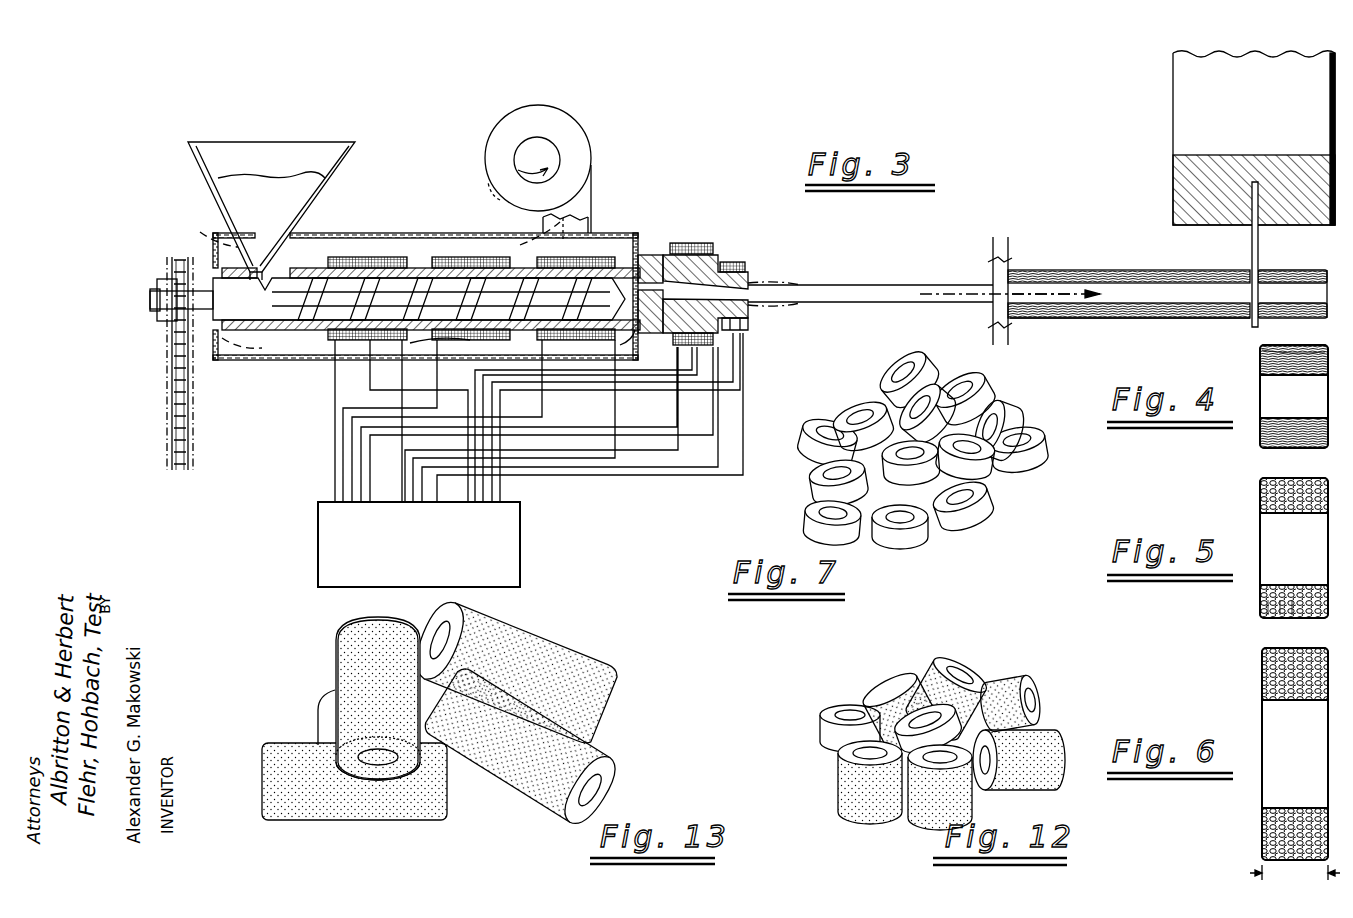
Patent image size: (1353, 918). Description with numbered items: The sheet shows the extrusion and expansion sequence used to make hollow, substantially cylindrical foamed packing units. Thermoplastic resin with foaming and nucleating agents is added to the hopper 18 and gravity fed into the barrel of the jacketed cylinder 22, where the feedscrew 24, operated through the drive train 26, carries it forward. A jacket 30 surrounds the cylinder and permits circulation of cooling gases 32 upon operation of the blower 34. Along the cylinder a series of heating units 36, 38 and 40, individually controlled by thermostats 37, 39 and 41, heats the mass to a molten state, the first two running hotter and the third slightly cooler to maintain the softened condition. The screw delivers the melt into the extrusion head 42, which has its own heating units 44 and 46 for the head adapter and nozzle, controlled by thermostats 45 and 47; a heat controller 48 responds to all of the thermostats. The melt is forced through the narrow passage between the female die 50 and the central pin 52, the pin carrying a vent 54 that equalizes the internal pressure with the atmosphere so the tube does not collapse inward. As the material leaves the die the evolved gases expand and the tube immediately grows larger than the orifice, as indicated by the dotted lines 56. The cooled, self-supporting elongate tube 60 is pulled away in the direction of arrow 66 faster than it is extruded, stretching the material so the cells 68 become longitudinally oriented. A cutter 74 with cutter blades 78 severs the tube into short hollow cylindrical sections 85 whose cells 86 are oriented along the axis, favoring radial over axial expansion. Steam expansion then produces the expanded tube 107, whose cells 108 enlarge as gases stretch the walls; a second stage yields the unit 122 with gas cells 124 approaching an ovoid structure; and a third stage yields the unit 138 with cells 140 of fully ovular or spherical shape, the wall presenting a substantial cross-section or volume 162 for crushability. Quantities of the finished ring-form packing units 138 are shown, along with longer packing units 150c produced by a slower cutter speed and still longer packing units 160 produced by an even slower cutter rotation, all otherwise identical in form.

In FIG. 3, the hopper 18 is at (358, 160).
In FIG. 3, the jacketed cylinder 22 is at (414, 258).
In FIG. 3, the feedscrew 24 is at (372, 279).
In FIG. 3, the drive train 26 is at (190, 414).
In FIG. 3, the jacket 30 is at (618, 233).
In FIG. 3, the cooling gases 32 is at (188, 354).
In FIG. 3, the blower 34 is at (575, 146).
In FIG. 3, the heating unit 36 is at (340, 345).
In FIG. 3, the thermostat 37 is at (378, 345).
In FIG. 3, the heating unit 38 is at (440, 345).
In FIG. 3, the thermostat 39 is at (468, 345).
In FIG. 3, the heating unit 40 is at (613, 347).
In FIG. 3, the thermostat 41 is at (556, 343).
In FIG. 3, the extrusion head 42 is at (730, 244).
In FIG. 3, the heating unit 44 is at (700, 243).
In FIG. 3, the thermostat 45 is at (673, 340).
In FIG. 3, the heating unit 46 is at (740, 263).
In FIG. 3, the thermostat 47 is at (742, 328).
In FIG. 3, the heat controller 48 is at (428, 550).
In FIG. 3, the female die 50 is at (748, 281).
In FIG. 3, the central pin 52 is at (748, 303).
In FIG. 3, the vent 54 is at (648, 256).
In FIG. 3, the dotted lines 56 is at (878, 286).
In FIG. 3, the elongate tube 60 is at (1088, 270).
In FIG. 3, the pulling direction arrow 66 is at (1060, 293).
In FIG. 3, the longitudinally oriented cells 68 is at (1072, 318).
In FIG. 3, the cutter 74 is at (1190, 183).
In FIG. 3, the cutter blades 78 is at (1251, 240).
In FIG. 3, the hollow cylindrical section 85 is at (1316, 270).
In FIG. 3, the cells 86 is at (1296, 273).
In FIG. 4, the expanded tube 107 is at (1310, 340).
In FIG. 4, the cells 108 is at (1270, 357).
In FIG. 5, the unit 122 is at (1262, 602).
In FIG. 5, the gas cells 124 is at (1292, 612).
In FIG. 6, the packing unit 138 is at (1262, 680).
In FIG. 7, the packing unit 138 is at (805, 474).
In FIG. 6, the cells 140 is at (1268, 828).
In FIG. 6, the cross-section or volume 162 is at (1258, 881).
In FIG. 12, the packing units 150c is at (1035, 680).
In FIG. 13, the packing units 160 is at (350, 656).